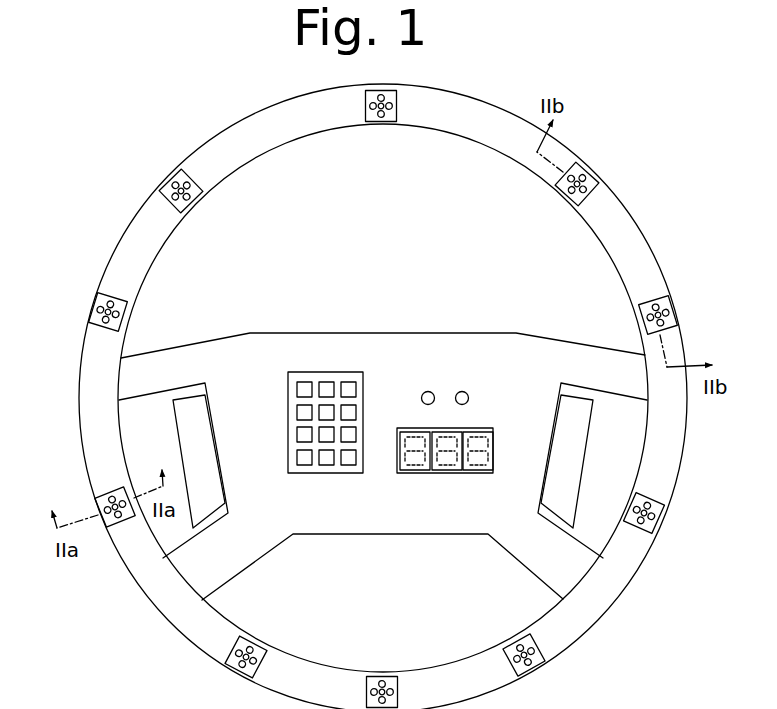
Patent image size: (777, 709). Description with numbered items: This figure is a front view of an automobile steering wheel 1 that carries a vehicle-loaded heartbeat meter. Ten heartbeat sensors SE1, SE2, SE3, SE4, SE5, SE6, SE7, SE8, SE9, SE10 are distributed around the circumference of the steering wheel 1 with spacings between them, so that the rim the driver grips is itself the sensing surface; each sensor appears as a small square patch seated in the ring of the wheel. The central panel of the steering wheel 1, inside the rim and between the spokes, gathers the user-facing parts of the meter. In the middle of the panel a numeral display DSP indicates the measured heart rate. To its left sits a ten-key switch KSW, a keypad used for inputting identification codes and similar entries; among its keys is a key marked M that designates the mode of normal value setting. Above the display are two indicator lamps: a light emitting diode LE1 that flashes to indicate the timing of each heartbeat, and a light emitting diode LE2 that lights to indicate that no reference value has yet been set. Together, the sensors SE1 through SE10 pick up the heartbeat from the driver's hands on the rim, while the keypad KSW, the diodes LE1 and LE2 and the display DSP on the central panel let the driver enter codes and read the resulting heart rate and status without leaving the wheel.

The steering wheel 1 is at (79, 374).
The heartbeat sensor SE1 is at (397, 94).
The heartbeat sensor SE2 is at (589, 177).
The heartbeat sensor SE3 is at (665, 304).
The heartbeat sensor SE4 is at (643, 531).
The heartbeat sensor SE5 is at (541, 650).
The heartbeat sensor SE6 is at (379, 678).
The heartbeat sensor SE7 is at (235, 666).
The heartbeat sensor SE8 is at (120, 520).
The heartbeat sensor SE9 is at (97, 307).
The heartbeat sensor SE10 is at (166, 184).
The ten-key switch KSW is at (323, 372).
The light emitting diode LE1 is at (428, 391).
The light emitting diode LE2 is at (463, 391).
The numeral display DSP is at (418, 476).